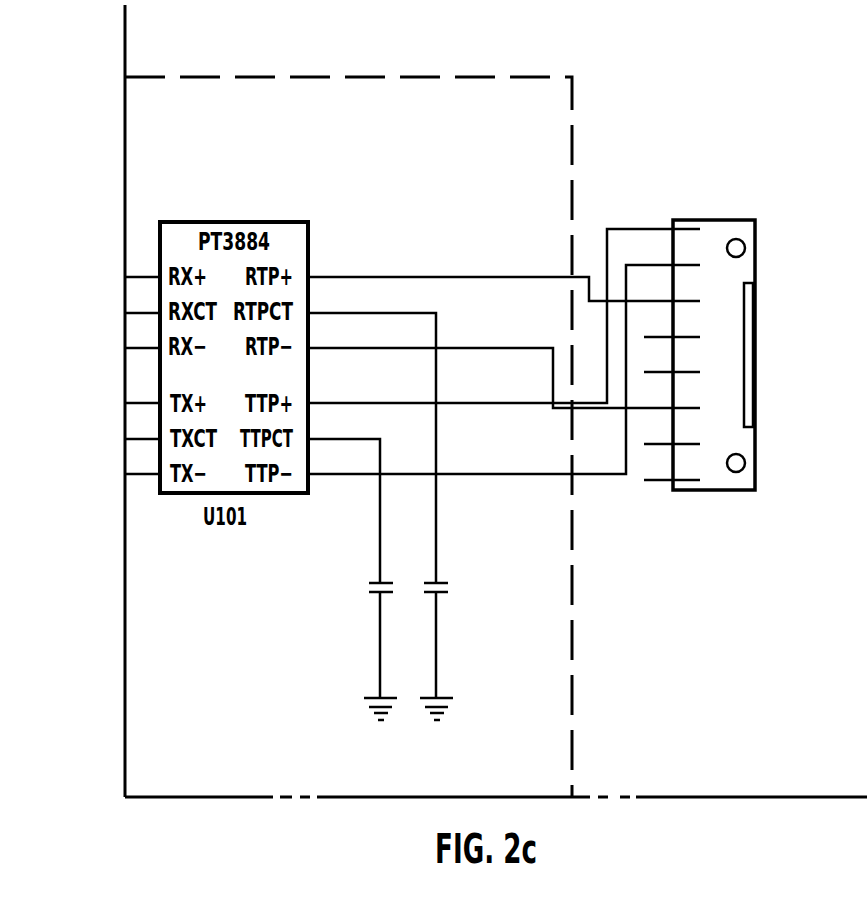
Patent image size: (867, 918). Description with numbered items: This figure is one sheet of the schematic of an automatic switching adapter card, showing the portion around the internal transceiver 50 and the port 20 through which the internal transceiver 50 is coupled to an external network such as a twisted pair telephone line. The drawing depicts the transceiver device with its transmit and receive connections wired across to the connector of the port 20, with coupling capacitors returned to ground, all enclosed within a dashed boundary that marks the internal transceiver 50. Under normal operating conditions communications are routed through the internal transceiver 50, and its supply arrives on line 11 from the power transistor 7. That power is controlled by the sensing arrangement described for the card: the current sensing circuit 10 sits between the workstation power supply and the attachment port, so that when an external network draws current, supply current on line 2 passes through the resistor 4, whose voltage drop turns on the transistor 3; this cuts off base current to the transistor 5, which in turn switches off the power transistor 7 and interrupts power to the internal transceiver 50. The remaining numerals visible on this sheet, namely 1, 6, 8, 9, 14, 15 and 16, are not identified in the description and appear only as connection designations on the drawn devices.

The internal transceiver 50 is at (566, 136).
The port 20 is at (699, 362).
The pin 1 is at (142, 263).
The line 2 is at (142, 298).
The transistor 3 is at (142, 333).
The resistor 4 is at (672, 322).
The transistor 5 is at (672, 357).
The pin 6 is at (142, 389).
The power transistor 7 is at (142, 425).
The pin 8 is at (142, 460).
The pin 9 is at (504, 370).
The current sensing circuit 10 is at (344, 496).
The line 11 is at (504, 316).
The pin 14 is at (504, 363).
The pin 15 is at (372, 433).
The pin 16 is at (504, 274).